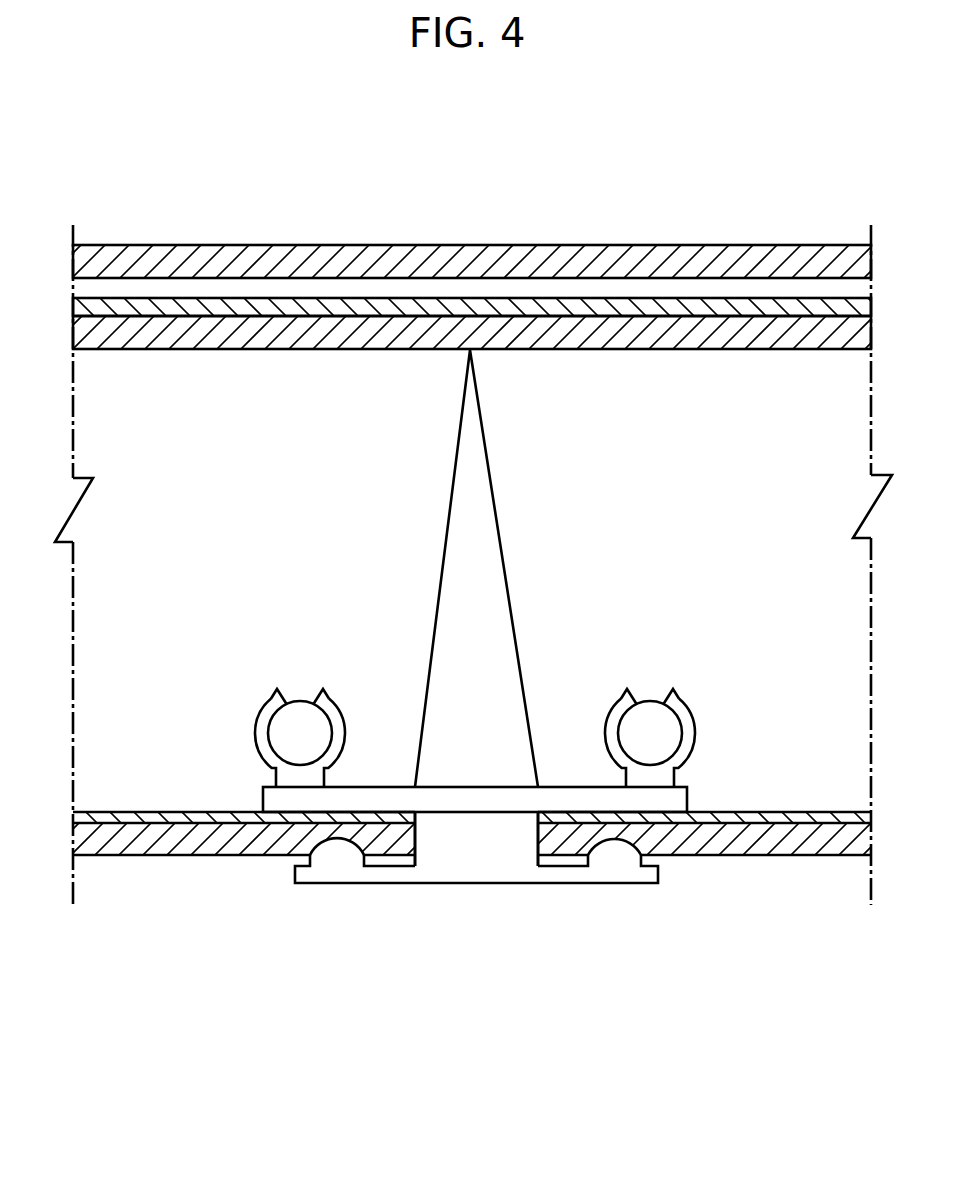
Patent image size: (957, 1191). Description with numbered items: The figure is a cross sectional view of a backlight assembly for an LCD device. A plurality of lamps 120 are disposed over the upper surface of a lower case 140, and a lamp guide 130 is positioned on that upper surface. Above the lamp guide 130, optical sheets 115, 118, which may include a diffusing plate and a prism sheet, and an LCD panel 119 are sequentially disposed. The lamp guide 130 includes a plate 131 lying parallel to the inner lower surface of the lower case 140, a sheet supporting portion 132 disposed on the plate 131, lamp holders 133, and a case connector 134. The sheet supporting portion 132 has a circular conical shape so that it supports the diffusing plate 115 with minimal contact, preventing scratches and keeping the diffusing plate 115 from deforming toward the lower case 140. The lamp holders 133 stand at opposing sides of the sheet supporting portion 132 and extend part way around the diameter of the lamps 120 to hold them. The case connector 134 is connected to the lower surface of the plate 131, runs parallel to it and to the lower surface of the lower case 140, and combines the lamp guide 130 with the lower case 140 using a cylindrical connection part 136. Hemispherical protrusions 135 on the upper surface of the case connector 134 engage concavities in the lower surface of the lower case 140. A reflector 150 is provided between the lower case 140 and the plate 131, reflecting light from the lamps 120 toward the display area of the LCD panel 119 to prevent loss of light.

The optical sheet 115 is at (625, 330).
The optical sheet 118 is at (343, 305).
The LCD panel 119 is at (220, 262).
The lamp 120 is at (300, 715).
The lamp guide 130 is at (612, 575).
The plate 131 is at (575, 798).
The sheet supporting portion 132 is at (470, 475).
The lamp holder 133 is at (337, 708).
The case connector 134 is at (390, 873).
The protrusion 135 is at (611, 875).
The connection part 136 is at (478, 860).
The lower case 140 is at (162, 838).
The reflector 150 is at (168, 813).